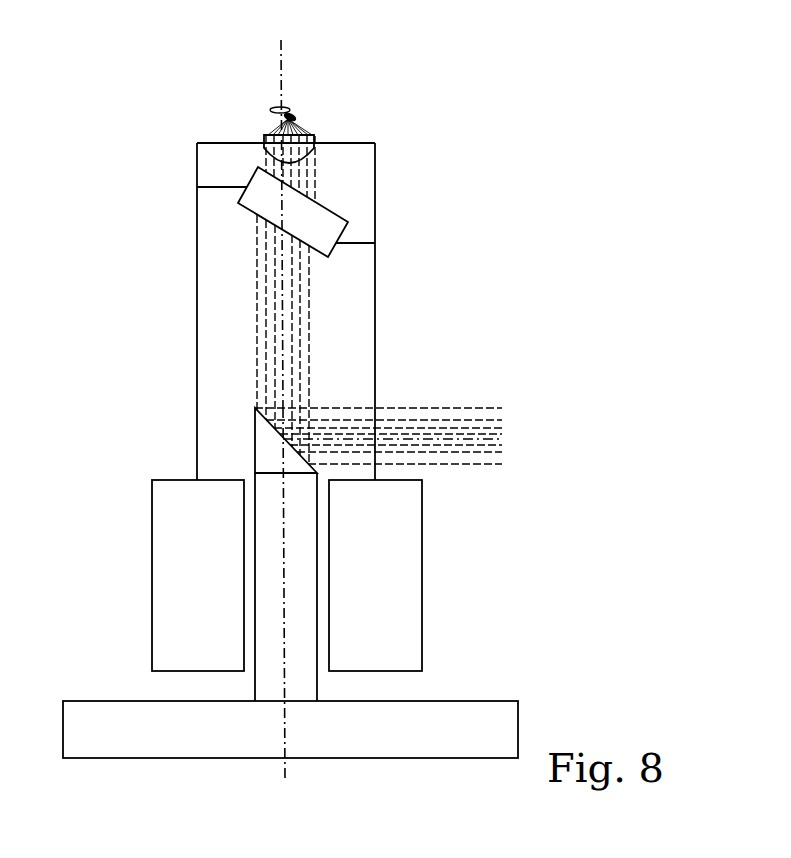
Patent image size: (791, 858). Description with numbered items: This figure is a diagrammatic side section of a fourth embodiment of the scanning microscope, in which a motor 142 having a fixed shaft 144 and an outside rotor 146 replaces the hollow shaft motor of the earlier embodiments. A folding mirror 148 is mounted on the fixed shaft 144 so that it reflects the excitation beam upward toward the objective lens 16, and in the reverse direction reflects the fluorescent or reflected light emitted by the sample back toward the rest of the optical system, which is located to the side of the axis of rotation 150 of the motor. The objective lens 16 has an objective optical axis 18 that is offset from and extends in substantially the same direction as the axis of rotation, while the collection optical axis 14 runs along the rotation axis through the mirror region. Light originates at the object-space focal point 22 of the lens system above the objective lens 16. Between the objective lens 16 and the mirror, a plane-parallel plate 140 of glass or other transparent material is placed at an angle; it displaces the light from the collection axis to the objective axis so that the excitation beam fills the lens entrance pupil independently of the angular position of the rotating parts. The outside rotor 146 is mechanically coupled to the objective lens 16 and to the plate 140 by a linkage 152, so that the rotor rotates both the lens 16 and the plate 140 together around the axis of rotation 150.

The objective optical axis 18 is at (282, 73).
The object-space focal point 22 is at (294, 113).
The objective lens 16 is at (316, 139).
The plane-parallel plate 140 is at (332, 214).
The linkage 152 is at (375, 305).
The folding mirror 148 is at (255, 430).
The collection optical axis 14 is at (283, 502).
The motor 142 is at (298, 635).
The outside rotor 146 is at (408, 607).
The fixed shaft 144 is at (285, 684).
The axis of rotation 150 is at (285, 775).